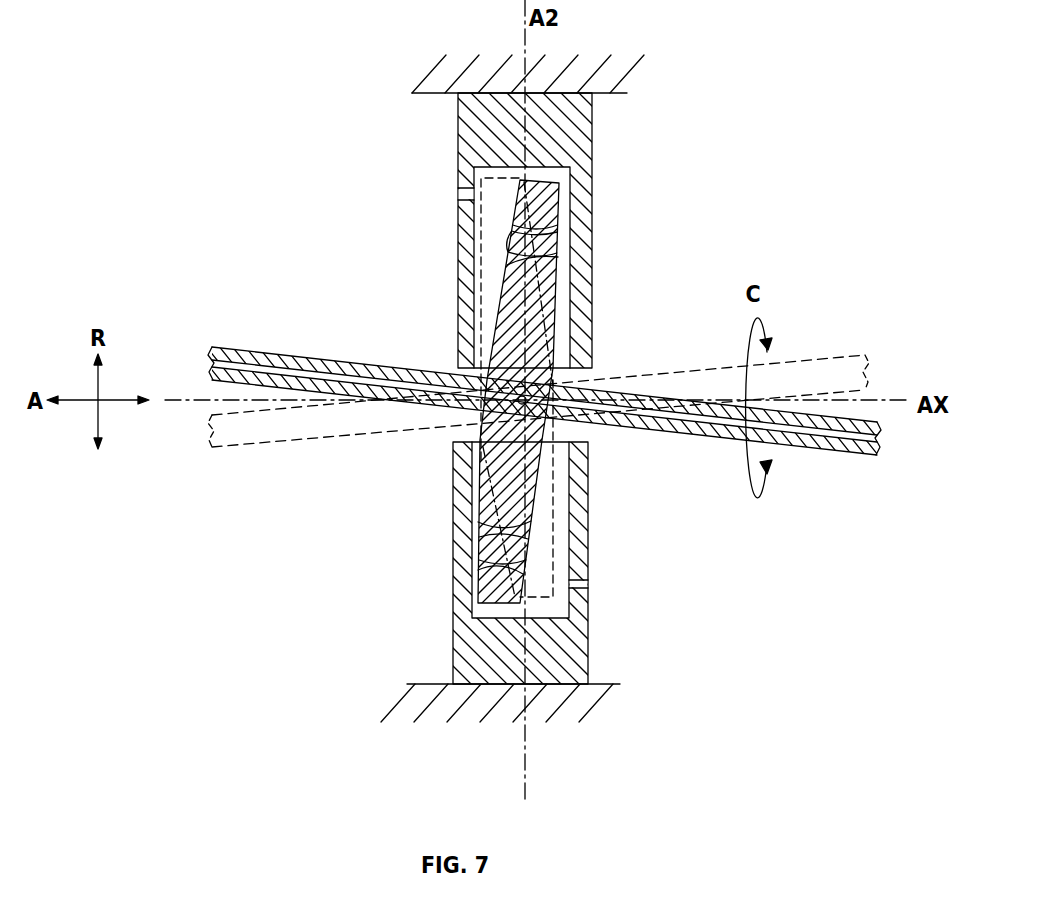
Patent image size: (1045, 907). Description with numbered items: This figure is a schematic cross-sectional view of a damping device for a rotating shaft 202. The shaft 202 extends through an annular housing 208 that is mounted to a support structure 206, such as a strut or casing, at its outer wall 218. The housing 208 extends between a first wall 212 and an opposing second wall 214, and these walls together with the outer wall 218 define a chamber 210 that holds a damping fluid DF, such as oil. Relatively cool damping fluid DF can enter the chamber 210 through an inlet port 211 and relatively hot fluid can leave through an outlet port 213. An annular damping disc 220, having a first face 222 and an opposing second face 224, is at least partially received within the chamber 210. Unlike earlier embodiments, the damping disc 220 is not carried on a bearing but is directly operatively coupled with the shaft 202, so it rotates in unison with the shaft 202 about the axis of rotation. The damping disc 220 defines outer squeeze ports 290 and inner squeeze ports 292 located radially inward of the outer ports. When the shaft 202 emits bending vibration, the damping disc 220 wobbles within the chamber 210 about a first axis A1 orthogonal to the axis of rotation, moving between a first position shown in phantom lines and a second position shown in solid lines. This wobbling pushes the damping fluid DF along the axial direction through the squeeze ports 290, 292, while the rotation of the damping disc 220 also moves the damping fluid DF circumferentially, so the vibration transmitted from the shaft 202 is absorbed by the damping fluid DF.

The shaft 202 is at (295, 356).
The support structure 206 is at (636, 64).
The annular housing 208 is at (591, 644).
The chamber 210 is at (482, 621).
The inlet port 211 is at (447, 190).
The first wall 212 is at (463, 537).
The outlet port 213 is at (597, 586).
The second wall 214 is at (592, 548).
The outer wall 218 is at (510, 120).
The damping disc 220 is at (545, 202).
The first face 222 is at (499, 292).
The second face 224 is at (562, 288).
The outer squeeze ports 290 is at (562, 228).
The inner squeeze ports 292 is at (499, 253).
The first axis A1 is at (518, 398).
The damping fluid DF is at (562, 489).